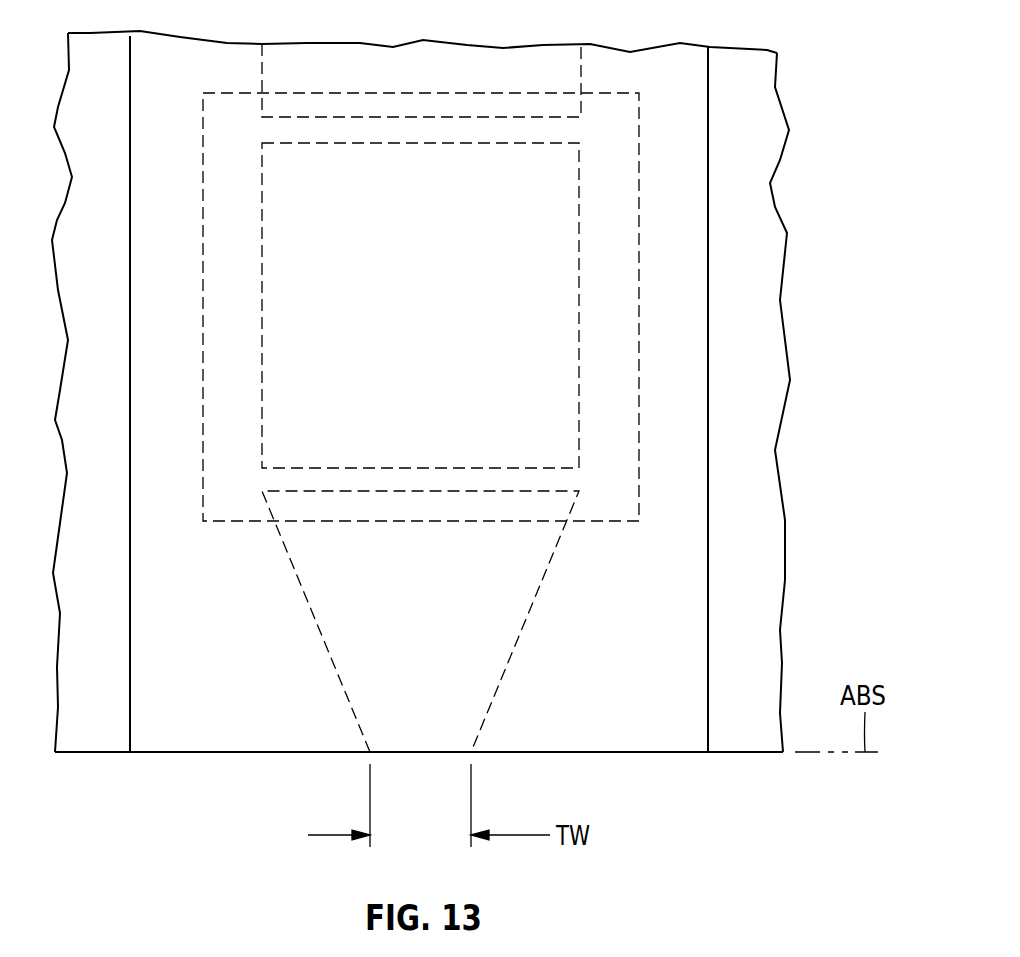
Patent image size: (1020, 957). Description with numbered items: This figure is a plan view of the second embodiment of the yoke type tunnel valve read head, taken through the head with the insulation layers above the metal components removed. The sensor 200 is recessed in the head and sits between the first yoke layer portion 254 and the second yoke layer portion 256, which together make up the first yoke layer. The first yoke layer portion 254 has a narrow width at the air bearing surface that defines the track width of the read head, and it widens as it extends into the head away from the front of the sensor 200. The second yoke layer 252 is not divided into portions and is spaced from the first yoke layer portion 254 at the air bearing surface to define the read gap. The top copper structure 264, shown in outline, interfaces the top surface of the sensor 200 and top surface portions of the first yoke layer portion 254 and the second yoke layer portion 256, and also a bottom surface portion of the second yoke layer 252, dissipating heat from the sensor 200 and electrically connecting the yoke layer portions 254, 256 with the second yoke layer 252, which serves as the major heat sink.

The sensor 200 is at (445, 349).
The second yoke layer 252 is at (649, 690).
The first yoke layer portion 254 is at (446, 676).
The second yoke layer portion 256 is at (522, 84).
The top copper structure 264 is at (639, 205).